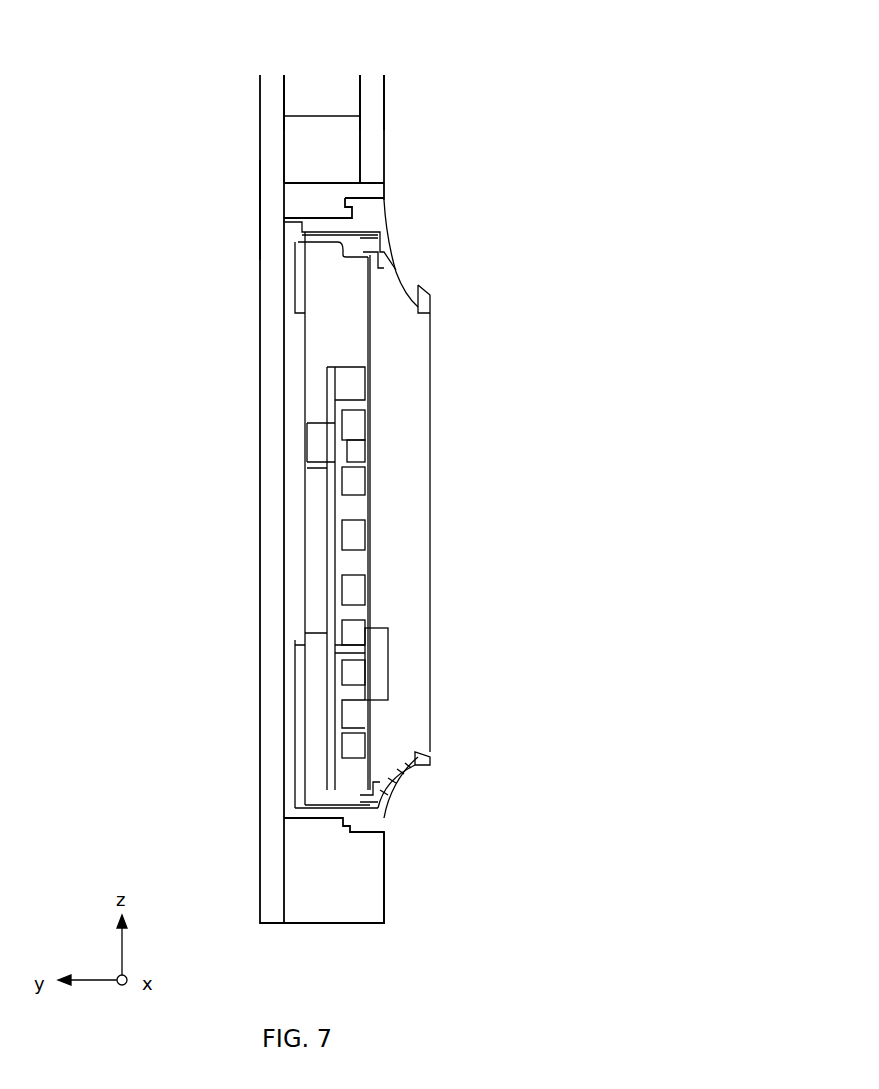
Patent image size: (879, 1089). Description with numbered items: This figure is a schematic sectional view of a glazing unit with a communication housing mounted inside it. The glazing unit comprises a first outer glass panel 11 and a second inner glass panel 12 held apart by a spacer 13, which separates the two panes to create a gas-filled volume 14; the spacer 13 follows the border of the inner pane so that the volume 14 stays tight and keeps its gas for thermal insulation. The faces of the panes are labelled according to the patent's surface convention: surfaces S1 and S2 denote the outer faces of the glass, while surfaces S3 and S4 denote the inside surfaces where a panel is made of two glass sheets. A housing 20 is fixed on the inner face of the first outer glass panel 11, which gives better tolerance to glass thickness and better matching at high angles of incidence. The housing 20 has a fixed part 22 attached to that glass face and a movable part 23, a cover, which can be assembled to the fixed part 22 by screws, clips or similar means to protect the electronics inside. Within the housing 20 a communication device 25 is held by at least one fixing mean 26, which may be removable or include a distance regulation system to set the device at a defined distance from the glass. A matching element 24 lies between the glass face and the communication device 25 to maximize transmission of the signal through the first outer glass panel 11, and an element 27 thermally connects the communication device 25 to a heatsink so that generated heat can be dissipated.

The first outer glass panel 11 is at (273, 838).
The second inner glass panel 12 is at (373, 140).
The spacer 13 is at (325, 162).
The volume 14 is at (313, 88).
The housing 20 is at (527, 527).
The fixed part 22 is at (355, 870).
The movable part 23 is at (372, 818).
The matching element 24 is at (297, 400).
The communication device 25 is at (333, 540).
The fixing mean 26 is at (358, 380).
The element 27 is at (353, 670).
The outer surfaces S1 is at (260, 213).
The outer surfaces S2 is at (283, 80).
The inside surface S3 is at (362, 82).
The inside surface S4 is at (385, 108).